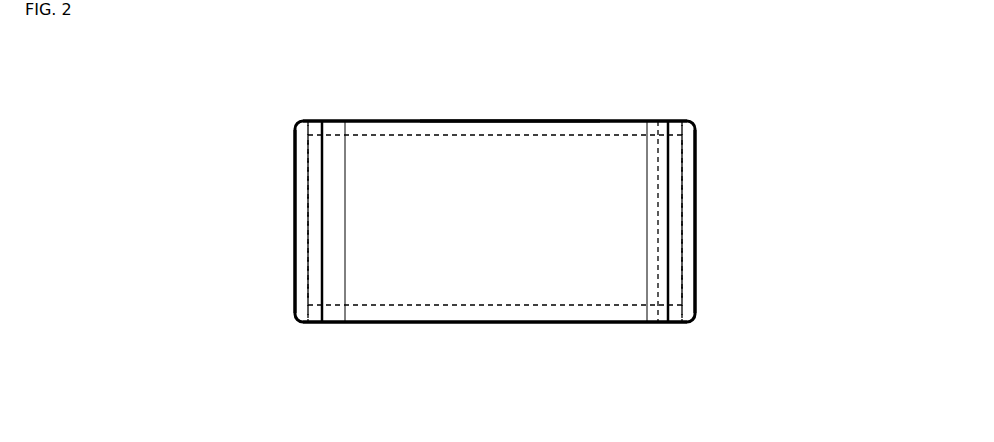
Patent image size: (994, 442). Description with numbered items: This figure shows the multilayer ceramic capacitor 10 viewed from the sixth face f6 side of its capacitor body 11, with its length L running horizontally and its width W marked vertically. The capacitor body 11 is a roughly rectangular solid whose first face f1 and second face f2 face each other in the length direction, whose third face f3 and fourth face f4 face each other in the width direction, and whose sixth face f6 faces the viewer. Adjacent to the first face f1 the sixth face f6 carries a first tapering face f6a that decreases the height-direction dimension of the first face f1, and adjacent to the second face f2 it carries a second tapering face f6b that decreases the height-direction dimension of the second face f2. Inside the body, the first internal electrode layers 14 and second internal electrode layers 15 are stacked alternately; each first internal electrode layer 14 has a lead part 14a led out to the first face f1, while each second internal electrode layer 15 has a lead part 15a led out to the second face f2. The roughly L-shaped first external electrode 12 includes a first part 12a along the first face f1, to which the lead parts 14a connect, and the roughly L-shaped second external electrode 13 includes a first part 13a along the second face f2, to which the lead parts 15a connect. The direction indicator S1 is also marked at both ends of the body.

The multilayer ceramic capacitor 10 is at (407, 116).
The capacitor body 11 is at (448, 120).
The first external electrode 12 is at (294, 188).
The first part 12a is at (296, 280).
The second external electrode 13 is at (697, 186).
The first part 13a is at (696, 280).
The first internal electrode layer 14 is at (310, 148).
The lead part 14a is at (263, 220).
The second internal electrode layer 15 is at (680, 147).
The lead part 15a is at (725, 220).
The first face f1 is at (307, 250).
The second face f2 is at (683, 250).
The third face f3 is at (513, 323).
The fourth face f4 is at (513, 120).
The sixth face f6 is at (548, 150).
The first tapering face f6a is at (330, 125).
The second tapering face f6b is at (660, 125).
The first direction S1 is at (291, 220).
The length L is at (695, 322).
The width W is at (695, 121).